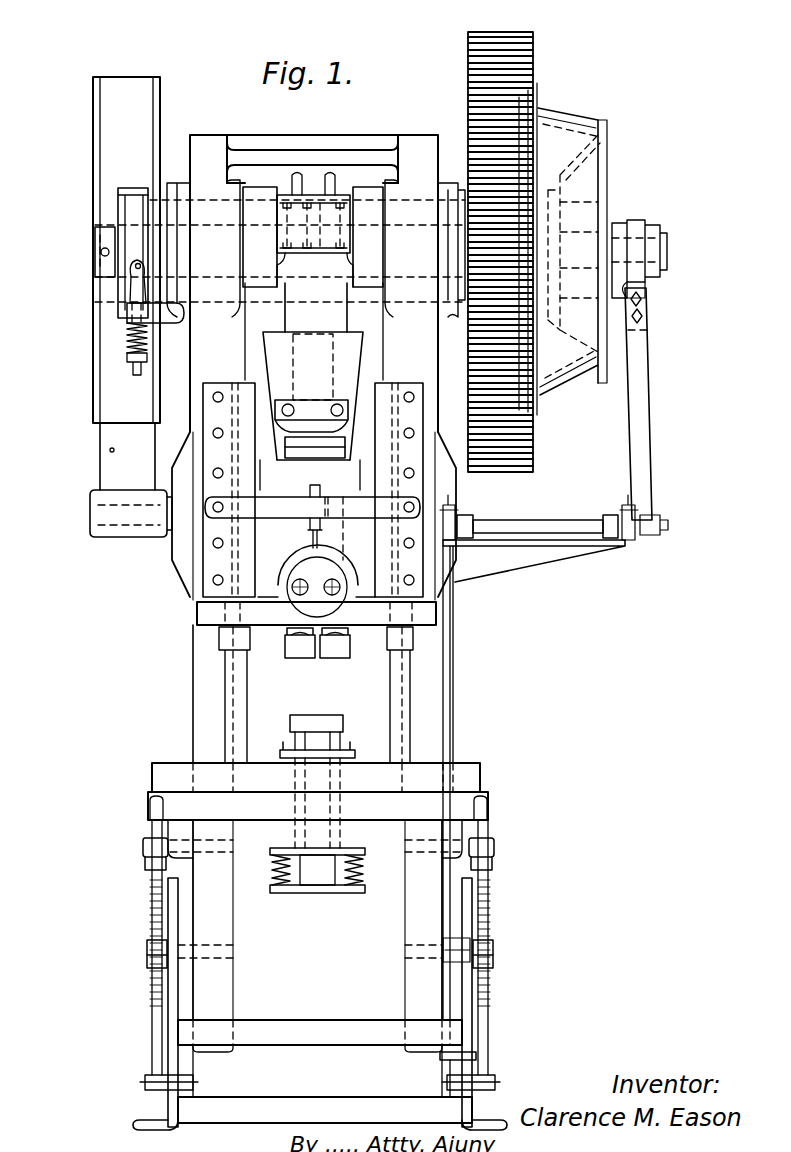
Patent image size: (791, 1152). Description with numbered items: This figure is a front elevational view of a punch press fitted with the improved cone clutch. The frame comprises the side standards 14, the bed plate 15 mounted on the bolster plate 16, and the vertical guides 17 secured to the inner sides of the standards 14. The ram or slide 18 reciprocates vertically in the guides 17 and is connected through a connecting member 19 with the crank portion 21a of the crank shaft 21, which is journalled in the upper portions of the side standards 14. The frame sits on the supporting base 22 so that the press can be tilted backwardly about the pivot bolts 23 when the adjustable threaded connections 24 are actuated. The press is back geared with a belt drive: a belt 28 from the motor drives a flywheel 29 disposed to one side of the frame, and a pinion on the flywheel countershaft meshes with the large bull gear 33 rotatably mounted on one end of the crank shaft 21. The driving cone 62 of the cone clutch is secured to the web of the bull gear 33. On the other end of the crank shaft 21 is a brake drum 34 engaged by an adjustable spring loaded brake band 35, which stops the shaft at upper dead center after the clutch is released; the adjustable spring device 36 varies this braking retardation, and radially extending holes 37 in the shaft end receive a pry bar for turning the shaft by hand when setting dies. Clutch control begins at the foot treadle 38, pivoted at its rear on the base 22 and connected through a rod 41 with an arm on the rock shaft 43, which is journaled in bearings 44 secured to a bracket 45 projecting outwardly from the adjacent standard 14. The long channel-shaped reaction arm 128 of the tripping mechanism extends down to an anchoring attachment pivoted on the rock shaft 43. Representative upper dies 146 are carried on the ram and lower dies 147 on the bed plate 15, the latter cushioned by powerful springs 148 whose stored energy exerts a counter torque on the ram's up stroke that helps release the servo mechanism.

The side standards 14 is at (205, 917).
The bed plate 15 is at (165, 778).
The bolster plate 16 is at (200, 810).
The vertical guides 17 is at (230, 577).
The ram or slide 18 is at (270, 590).
The connecting member 19 is at (287, 340).
The crank shaft 21 is at (415, 220).
The crank portion 21a is at (270, 208).
The supporting base 22 is at (165, 1120).
The pivot bolts 23 is at (155, 952).
The adjustable threaded connections 24 is at (150, 878).
The belt 28 is at (110, 455).
The flywheel 29 is at (93, 110).
The bull gear 33 is at (528, 55).
The brake drum 34 is at (125, 296).
The brake band 35 is at (132, 210).
The adjustable spring device 36 is at (130, 347).
The radially extending holes 37 is at (100, 262).
The foot treadle 38 is at (473, 1058).
The rod 41 is at (452, 700).
The rock shaft 43 is at (525, 528).
The bearings 44 is at (472, 525).
The bracket 45 is at (540, 564).
The driving cone 62 is at (580, 118).
The channel-shaped reaction arm 128 is at (640, 402).
The upper dies 146 is at (305, 655).
The lower dies 147 is at (305, 720).
The cushioning springs 148 is at (275, 878).